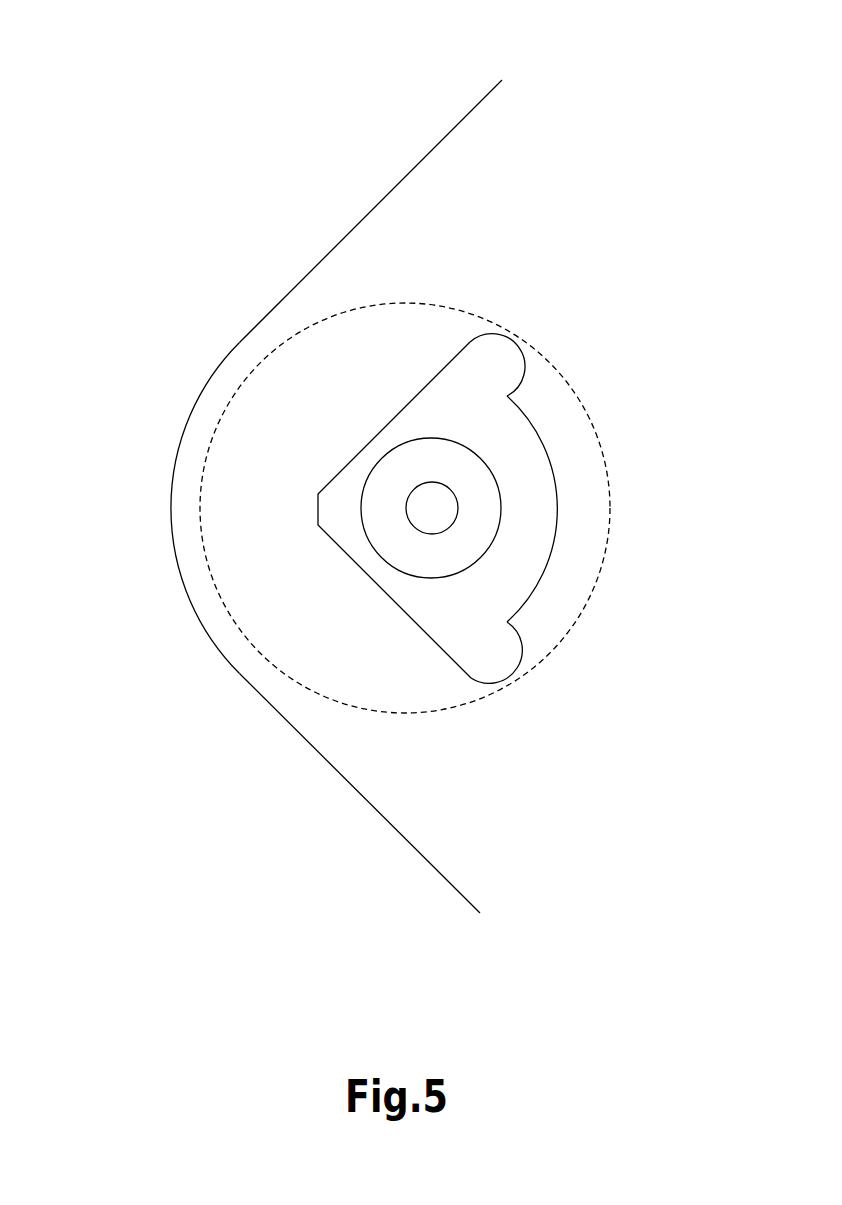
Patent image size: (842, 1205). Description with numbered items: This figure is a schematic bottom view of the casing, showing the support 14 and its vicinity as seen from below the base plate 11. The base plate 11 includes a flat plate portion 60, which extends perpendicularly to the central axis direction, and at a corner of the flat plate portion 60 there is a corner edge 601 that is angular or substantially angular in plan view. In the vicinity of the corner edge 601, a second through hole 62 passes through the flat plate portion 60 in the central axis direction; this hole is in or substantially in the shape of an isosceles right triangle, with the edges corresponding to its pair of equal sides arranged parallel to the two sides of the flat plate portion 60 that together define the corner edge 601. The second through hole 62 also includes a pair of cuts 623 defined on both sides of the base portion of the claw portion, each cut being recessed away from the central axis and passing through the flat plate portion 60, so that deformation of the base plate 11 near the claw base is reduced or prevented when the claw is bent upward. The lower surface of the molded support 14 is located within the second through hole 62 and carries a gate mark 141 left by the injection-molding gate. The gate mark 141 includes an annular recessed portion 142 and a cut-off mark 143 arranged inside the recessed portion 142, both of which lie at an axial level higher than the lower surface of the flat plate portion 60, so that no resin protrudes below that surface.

The base plate 11 is at (414, 134).
The support 14 is at (243, 387).
The flat plate portion 60 is at (440, 795).
The corner edge 601 is at (171, 510).
The second through hole 62 is at (421, 428).
The cuts 623 is at (505, 352).
The gate mark 141 is at (577, 508).
The recessed portion 142 is at (472, 483).
The cut-off mark 143 is at (437, 508).